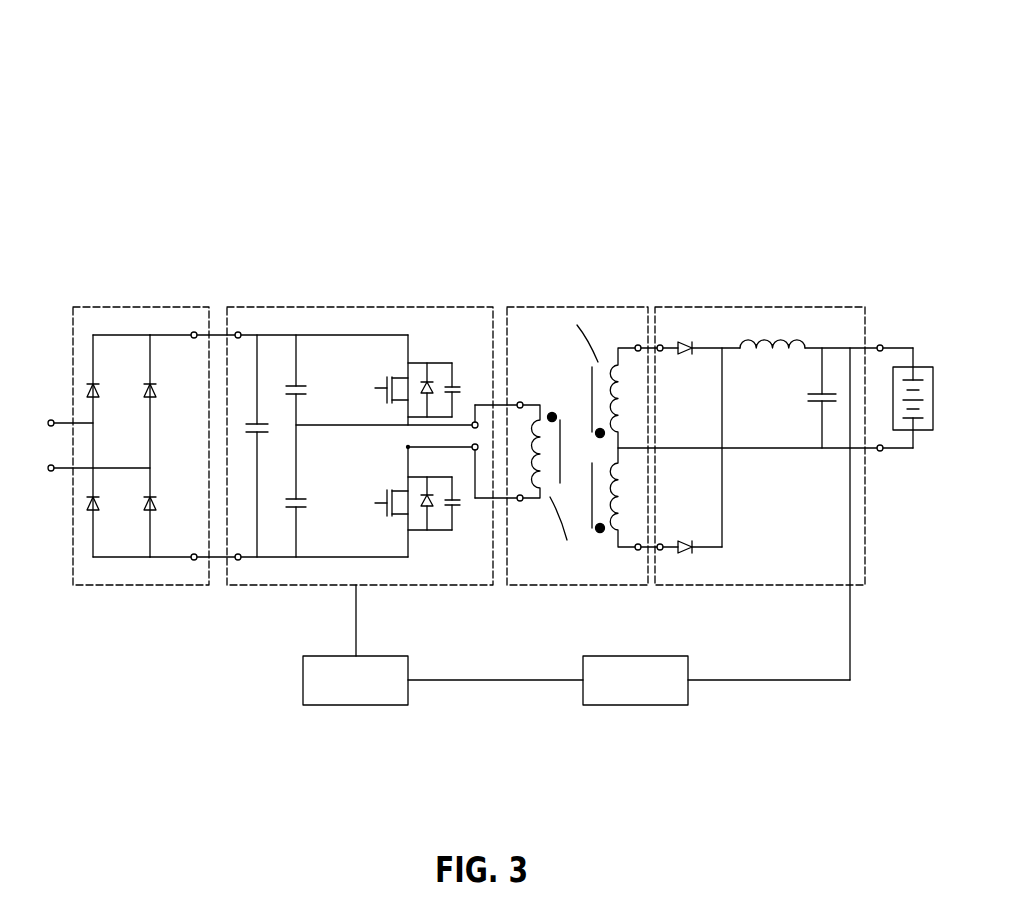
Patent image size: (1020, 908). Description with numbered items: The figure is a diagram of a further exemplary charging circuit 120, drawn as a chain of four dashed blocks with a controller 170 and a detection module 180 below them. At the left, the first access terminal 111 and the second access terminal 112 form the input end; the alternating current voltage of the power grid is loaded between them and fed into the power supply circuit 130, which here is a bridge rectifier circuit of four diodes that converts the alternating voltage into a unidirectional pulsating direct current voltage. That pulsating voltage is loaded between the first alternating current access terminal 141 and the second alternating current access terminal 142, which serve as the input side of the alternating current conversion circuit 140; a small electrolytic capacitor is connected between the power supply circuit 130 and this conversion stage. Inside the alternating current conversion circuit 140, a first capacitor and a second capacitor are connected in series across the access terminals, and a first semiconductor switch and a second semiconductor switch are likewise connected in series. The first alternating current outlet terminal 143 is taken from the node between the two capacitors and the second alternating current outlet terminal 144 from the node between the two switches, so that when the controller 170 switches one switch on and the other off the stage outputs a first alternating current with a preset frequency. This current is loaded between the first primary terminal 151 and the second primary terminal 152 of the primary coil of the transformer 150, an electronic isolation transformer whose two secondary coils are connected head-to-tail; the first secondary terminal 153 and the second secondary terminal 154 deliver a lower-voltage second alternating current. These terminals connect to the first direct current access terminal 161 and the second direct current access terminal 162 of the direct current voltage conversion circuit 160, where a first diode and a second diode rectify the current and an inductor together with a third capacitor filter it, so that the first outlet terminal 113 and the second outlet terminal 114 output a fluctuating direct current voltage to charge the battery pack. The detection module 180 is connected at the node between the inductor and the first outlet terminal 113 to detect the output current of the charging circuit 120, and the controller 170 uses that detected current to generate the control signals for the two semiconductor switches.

The charging circuit 120 is at (720, 112).
The power supply circuit 130 is at (142, 307).
The alternating current conversion circuit 140 is at (357, 307).
The transformer 150 is at (578, 307).
The direct current voltage conversion circuit 160 is at (758, 307).
The controller 170 is at (357, 705).
The detection module 180 is at (640, 705).
The first access terminal 111 is at (50, 420).
The second access terminal 112 is at (50, 465).
The first outlet terminal 113 is at (883, 346).
The second outlet terminal 114 is at (883, 451).
The first alternating current access terminal 141 is at (240, 332).
The second alternating current access terminal 142 is at (240, 560).
The first alternating current outlet terminal 143 is at (474, 422).
The second alternating current outlet terminal 144 is at (474, 450).
The first primary terminal 151 is at (521, 403).
The second primary terminal 152 is at (521, 501).
The first secondary terminal 153 is at (637, 346).
The second secondary terminal 154 is at (637, 550).
The first direct current access terminal 161 is at (661, 345).
The second direct current access terminal 162 is at (662, 550).